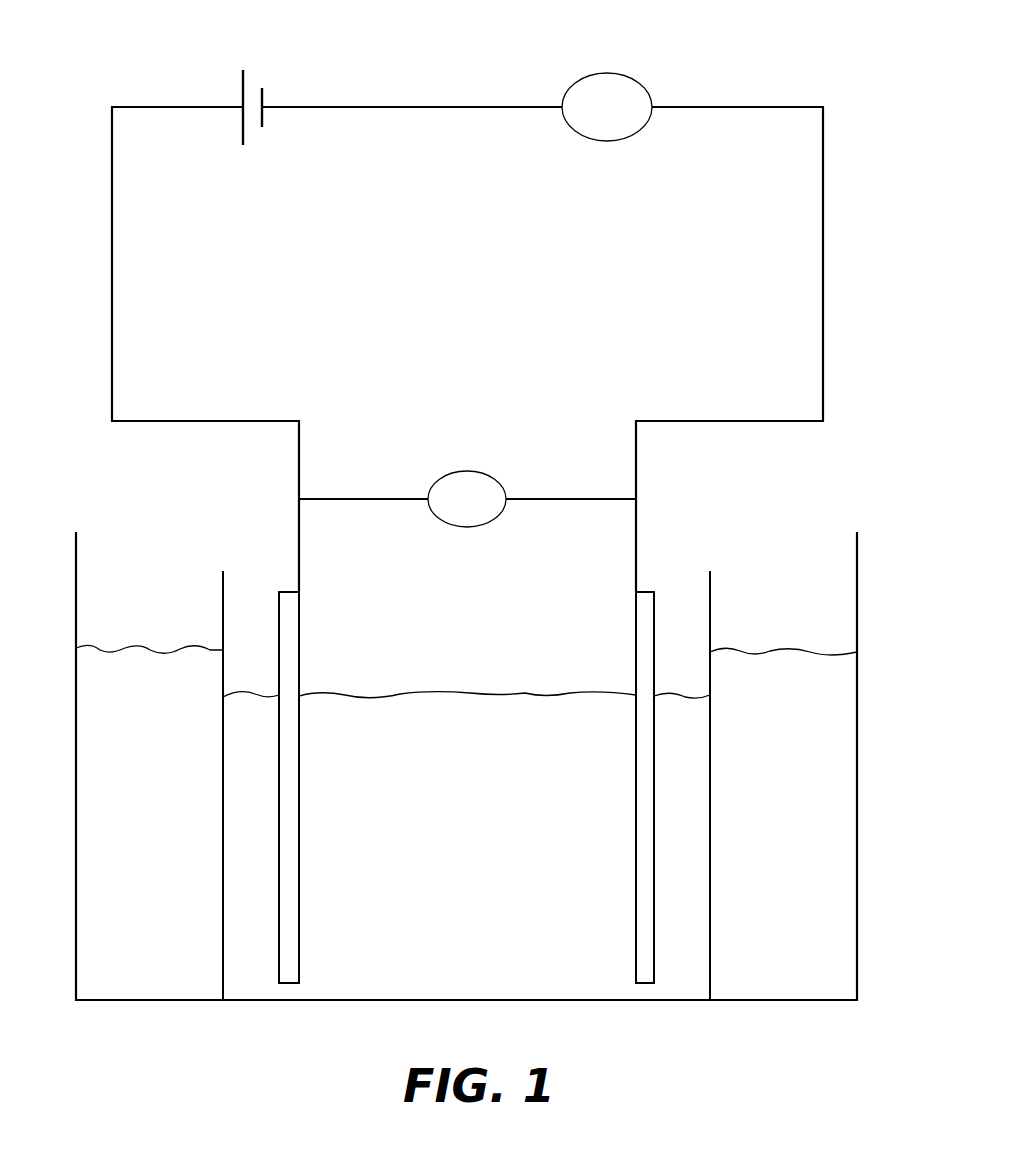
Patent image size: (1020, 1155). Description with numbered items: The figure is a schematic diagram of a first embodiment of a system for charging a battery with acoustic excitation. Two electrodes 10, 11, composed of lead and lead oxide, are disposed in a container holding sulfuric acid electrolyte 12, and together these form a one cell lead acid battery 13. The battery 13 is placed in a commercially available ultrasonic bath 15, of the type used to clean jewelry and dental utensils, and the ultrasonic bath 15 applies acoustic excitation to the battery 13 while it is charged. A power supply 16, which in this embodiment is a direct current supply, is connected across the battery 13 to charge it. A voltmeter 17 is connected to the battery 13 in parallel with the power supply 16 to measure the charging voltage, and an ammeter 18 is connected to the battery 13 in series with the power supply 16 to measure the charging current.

The electrode 10 is at (300, 606).
The electrode 11 is at (634, 607).
The sulfuric acid electrolyte 12 is at (421, 694).
The one cell lead acid battery 13 is at (689, 543).
The ultrasonic bath 15 is at (885, 614).
The power supply 16 is at (252, 101).
The voltmeter 17 is at (467, 471).
The ammeter 18 is at (606, 73).